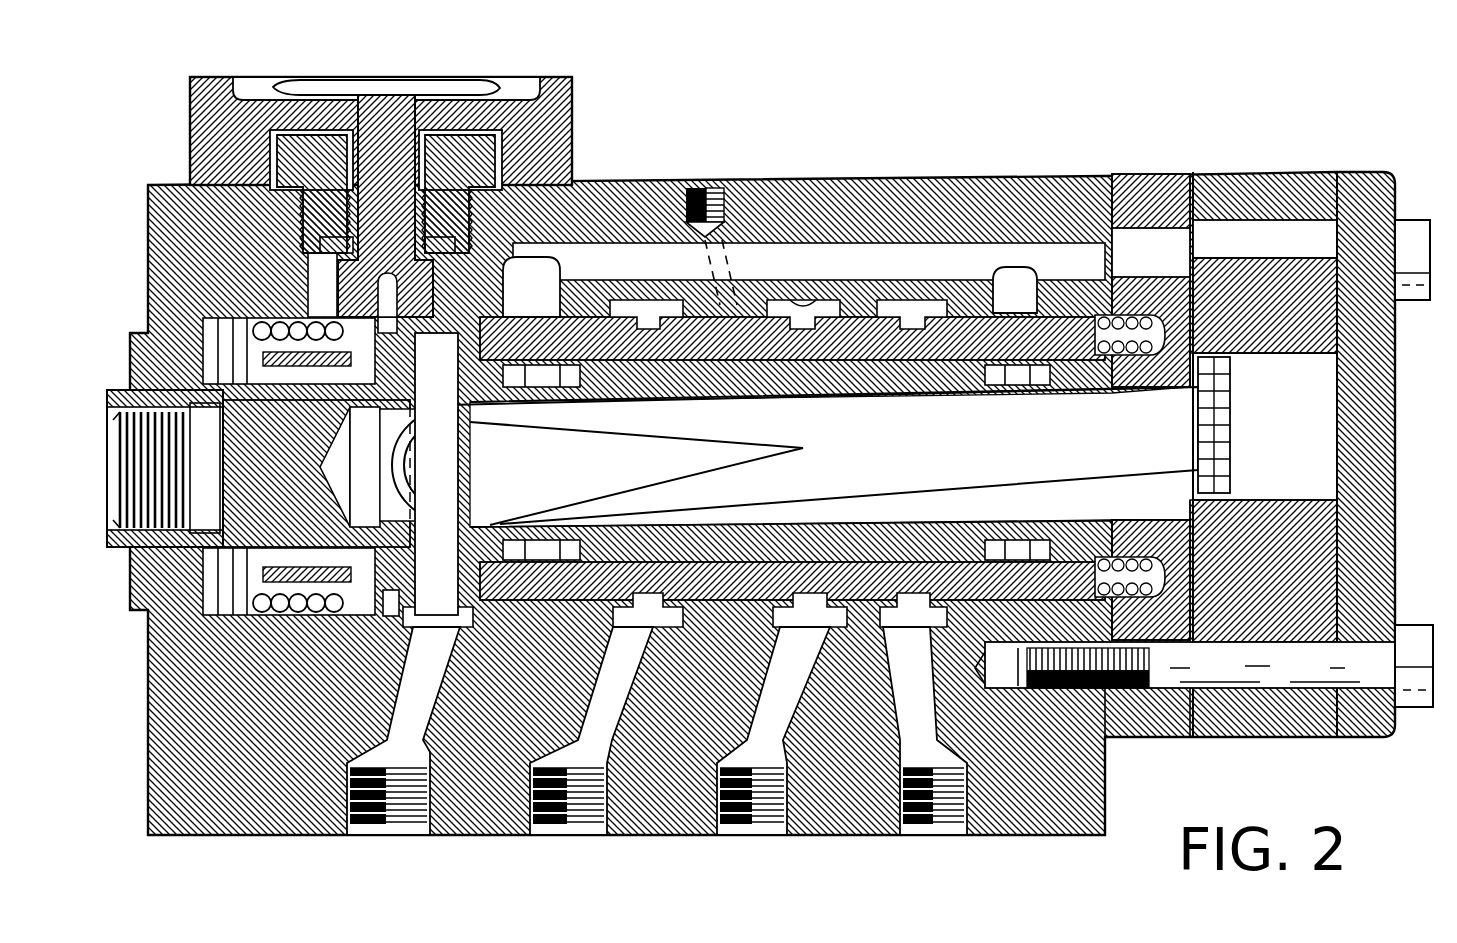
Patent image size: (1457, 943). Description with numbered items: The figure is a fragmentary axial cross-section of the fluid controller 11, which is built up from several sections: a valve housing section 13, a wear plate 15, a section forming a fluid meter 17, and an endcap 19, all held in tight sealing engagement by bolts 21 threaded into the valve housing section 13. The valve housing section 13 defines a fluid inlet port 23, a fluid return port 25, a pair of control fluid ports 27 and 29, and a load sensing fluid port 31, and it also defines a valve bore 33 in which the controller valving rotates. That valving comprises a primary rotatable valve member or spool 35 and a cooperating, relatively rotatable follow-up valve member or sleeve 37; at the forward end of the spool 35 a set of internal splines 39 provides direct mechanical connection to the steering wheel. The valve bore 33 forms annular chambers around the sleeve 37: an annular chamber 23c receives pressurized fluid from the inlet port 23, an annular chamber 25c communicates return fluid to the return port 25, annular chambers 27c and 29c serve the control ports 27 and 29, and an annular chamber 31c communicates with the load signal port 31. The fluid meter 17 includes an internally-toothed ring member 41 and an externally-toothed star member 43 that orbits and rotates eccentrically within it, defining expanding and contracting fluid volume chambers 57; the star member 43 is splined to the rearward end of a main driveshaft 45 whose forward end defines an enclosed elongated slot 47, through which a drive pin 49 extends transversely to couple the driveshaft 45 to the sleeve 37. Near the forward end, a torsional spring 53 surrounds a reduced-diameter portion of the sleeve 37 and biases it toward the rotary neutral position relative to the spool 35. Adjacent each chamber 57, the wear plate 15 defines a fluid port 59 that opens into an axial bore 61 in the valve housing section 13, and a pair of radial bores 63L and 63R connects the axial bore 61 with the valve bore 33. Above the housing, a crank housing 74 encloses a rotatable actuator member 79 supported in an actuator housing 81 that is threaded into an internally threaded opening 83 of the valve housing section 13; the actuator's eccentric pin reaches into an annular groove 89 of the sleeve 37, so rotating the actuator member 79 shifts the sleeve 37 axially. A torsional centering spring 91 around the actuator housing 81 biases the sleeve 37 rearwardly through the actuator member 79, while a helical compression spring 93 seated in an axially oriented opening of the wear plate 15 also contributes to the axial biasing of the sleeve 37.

The fluid controller 11 is at (905, 140).
The valve housing section 13 is at (742, 529).
The wear plate 15 is at (1153, 712).
The fluid meter 17 is at (1266, 412).
The endcap 19 is at (1356, 190).
The bolts 21 is at (1413, 302).
The fluid inlet port 23 is at (762, 815).
The annular chamber 23c is at (828, 292).
The fluid return port 25 is at (412, 815).
The annular chamber 25c is at (446, 630).
The control fluid port 27 is at (942, 815).
The annular chamber 27c is at (906, 628).
The control fluid port 29 is at (582, 815).
The annular chamber 29c is at (642, 630).
The load sensing fluid port 31 is at (714, 190).
The annular chamber 31c is at (735, 318).
The valve bore 33 is at (990, 590).
The primary rotatable valve member 35 is at (930, 522).
The follow-up valve member 37 is at (812, 524).
The internal splines 39 is at (108, 440).
The internally-toothed ring member 41 is at (1262, 712).
The externally-toothed star member 43 is at (1265, 305).
The main driveshaft 45 is at (811, 444).
The enclosed elongated slot 47 is at (460, 470).
The drive pin 49 is at (430, 388).
The torsional spring 53 is at (296, 606).
The fluid volume chambers 57 is at (1266, 243).
The fluid port 59 is at (1148, 240).
The axial bores 61 is at (810, 230).
The radial bore 63L is at (540, 290).
The radial bore 63R is at (1032, 252).
The crank housing 74 is at (384, 165).
The rotatable actuator member 79 is at (385, 100).
The actuator housing 81 is at (490, 160).
The internally threaded opening 83 is at (302, 222).
The annular groove 89 is at (388, 618).
The torsional centering spring 91 is at (292, 90).
The helical compression spring 93 is at (1170, 575).